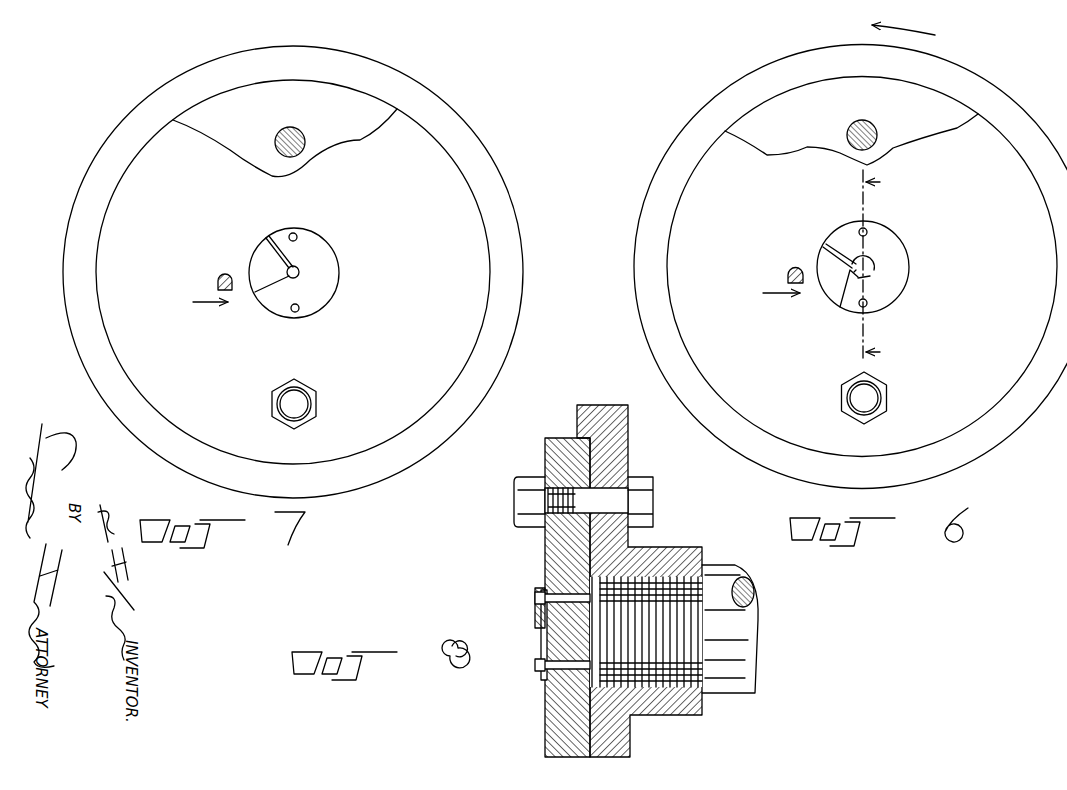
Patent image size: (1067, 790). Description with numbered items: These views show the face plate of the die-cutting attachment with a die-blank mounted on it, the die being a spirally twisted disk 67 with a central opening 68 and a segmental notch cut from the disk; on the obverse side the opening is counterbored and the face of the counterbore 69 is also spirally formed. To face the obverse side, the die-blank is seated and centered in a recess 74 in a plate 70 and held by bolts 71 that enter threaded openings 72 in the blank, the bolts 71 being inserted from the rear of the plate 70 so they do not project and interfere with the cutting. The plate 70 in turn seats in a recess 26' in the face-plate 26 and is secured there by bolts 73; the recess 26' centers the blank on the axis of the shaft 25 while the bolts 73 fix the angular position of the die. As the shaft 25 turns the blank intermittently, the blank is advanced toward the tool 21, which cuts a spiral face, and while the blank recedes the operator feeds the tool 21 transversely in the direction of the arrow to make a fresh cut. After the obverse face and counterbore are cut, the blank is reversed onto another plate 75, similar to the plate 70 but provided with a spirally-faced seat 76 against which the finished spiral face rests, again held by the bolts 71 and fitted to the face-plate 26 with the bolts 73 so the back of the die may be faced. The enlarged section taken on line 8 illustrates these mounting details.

In FIG. 6, the section line 8— 8 is at (878, 266).
In FIG. 7, the tool 21 is at (221, 278).
In FIG. 6, the tool 21 is at (790, 270).
In FIG. 8, the shaft 25 is at (712, 568).
In FIG. 6, the face-plate 26 is at (850, 257).
In FIG. 8, the face-plate 26 is at (599, 581).
In FIG. 7, the recess 26' is at (285, 106).
In FIG. 6, the recess 26' is at (862, 245).
In FIG. 7, the spirally twisted disk 67 is at (333, 253).
In FIG. 6, the spirally twisted disk 67 is at (900, 254).
In FIG. 8, the spirally twisted disk 67 is at (545, 655).
In FIG. 6, the central opening 68 is at (873, 277).
In FIG. 6, the counterbore 69 is at (870, 275).
In FIG. 6, the plate 70 is at (692, 353).
In FIG. 8, the plate 70 is at (558, 552).
In FIG. 8, the bolts 71 is at (563, 594).
In FIG. 7, the threaded openings 72 is at (297, 237).
In FIG. 6, the threaded openings 72 is at (859, 229).
In FIG. 8, the threaded openings 72 is at (538, 598).
In FIG. 7, the bolts 73 is at (305, 142).
In FIG. 6, the bolts 73 is at (846, 133).
In FIG. 8, the bolts 73 is at (642, 503).
In FIG. 6, the recess 74 is at (828, 265).
In FIG. 7, the plate 75 is at (456, 198).
In FIG. 7, the spirally-faced seat 76 is at (265, 258).